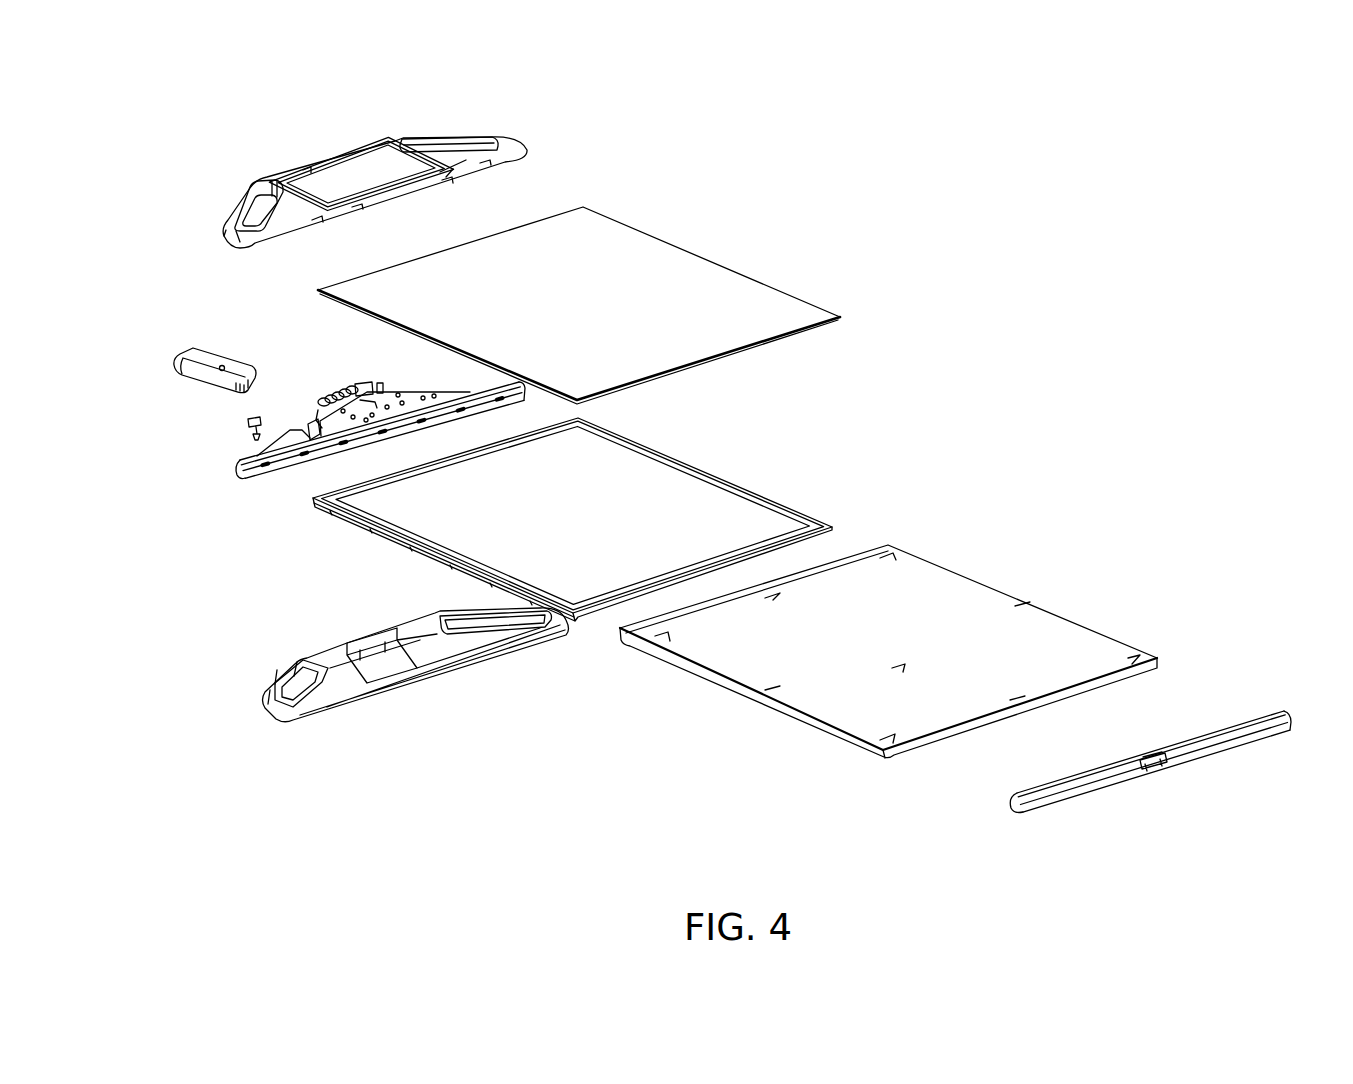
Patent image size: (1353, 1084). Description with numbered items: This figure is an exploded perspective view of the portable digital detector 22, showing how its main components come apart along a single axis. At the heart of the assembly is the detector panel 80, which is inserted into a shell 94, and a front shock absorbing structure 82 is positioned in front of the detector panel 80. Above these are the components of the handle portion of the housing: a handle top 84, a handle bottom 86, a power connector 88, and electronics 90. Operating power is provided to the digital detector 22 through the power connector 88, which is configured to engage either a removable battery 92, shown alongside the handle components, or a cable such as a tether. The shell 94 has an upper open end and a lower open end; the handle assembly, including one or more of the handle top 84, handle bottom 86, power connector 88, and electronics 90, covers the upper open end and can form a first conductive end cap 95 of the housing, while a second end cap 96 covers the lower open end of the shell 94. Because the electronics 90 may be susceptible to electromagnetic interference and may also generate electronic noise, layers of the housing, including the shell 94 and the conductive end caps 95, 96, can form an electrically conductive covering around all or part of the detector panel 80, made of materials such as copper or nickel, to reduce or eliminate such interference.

The digital detector 22 is at (995, 268).
The detector panel 80 is at (352, 573).
The front shock absorbing structure 82 is at (720, 260).
The handle top 84 is at (510, 143).
The handle bottom 86 is at (277, 718).
The power connector 88 is at (312, 430).
The electronics 90 is at (405, 388).
The removable battery 92 is at (200, 377).
The shell 94 is at (795, 710).
The first conductive end cap 95 is at (270, 484).
The end cap 96 is at (1060, 800).